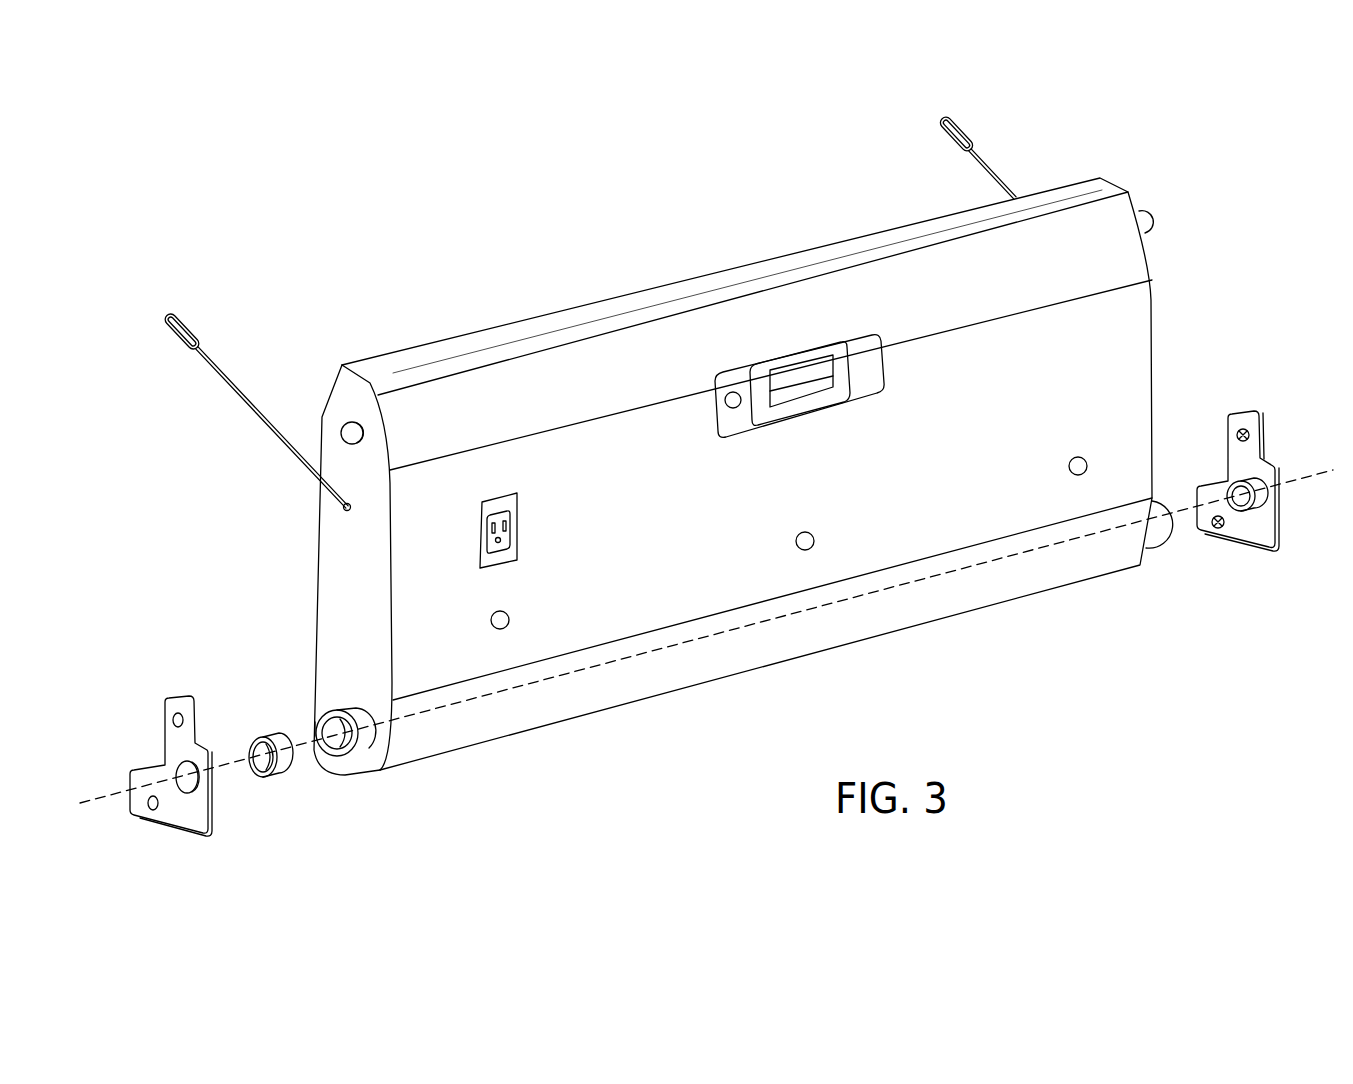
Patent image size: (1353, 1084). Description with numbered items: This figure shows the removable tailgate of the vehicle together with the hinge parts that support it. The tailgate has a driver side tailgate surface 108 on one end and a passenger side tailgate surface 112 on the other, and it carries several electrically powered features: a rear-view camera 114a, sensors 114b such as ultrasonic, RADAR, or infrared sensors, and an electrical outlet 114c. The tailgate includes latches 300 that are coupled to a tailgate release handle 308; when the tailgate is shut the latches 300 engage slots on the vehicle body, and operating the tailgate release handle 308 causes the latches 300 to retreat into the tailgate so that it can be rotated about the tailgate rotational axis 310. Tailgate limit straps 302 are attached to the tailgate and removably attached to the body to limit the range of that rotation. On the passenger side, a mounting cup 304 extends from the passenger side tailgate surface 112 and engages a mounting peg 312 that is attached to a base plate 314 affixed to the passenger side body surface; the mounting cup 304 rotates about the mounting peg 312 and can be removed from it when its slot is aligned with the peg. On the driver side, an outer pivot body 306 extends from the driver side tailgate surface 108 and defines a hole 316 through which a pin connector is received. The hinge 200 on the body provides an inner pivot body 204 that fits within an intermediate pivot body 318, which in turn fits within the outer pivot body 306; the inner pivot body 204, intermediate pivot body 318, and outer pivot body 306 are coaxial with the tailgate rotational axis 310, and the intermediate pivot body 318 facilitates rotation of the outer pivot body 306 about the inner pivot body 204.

The driver side tailgate surface 108 is at (333, 572).
The passenger side tailgate surface 112 is at (1152, 279).
The rear-view camera 114a is at (733, 391).
The sensors 114b is at (509, 617).
The electrical outlet 114c is at (513, 524).
The hinge 200 is at (170, 693).
The inner pivot body 204 is at (210, 758).
The latches 300 is at (1153, 220).
The tailgate limit straps 302 is at (233, 378).
The mounting cup 304 is at (1154, 533).
The outer pivot body 306 is at (348, 700).
The tailgate release handle 308 is at (800, 372).
The tailgate rotational axis 310 is at (105, 803).
The mounting peg 312 is at (1246, 480).
The base plate 314 is at (1247, 412).
The hole 316 is at (312, 734).
The intermediate pivot body 318 is at (287, 778).